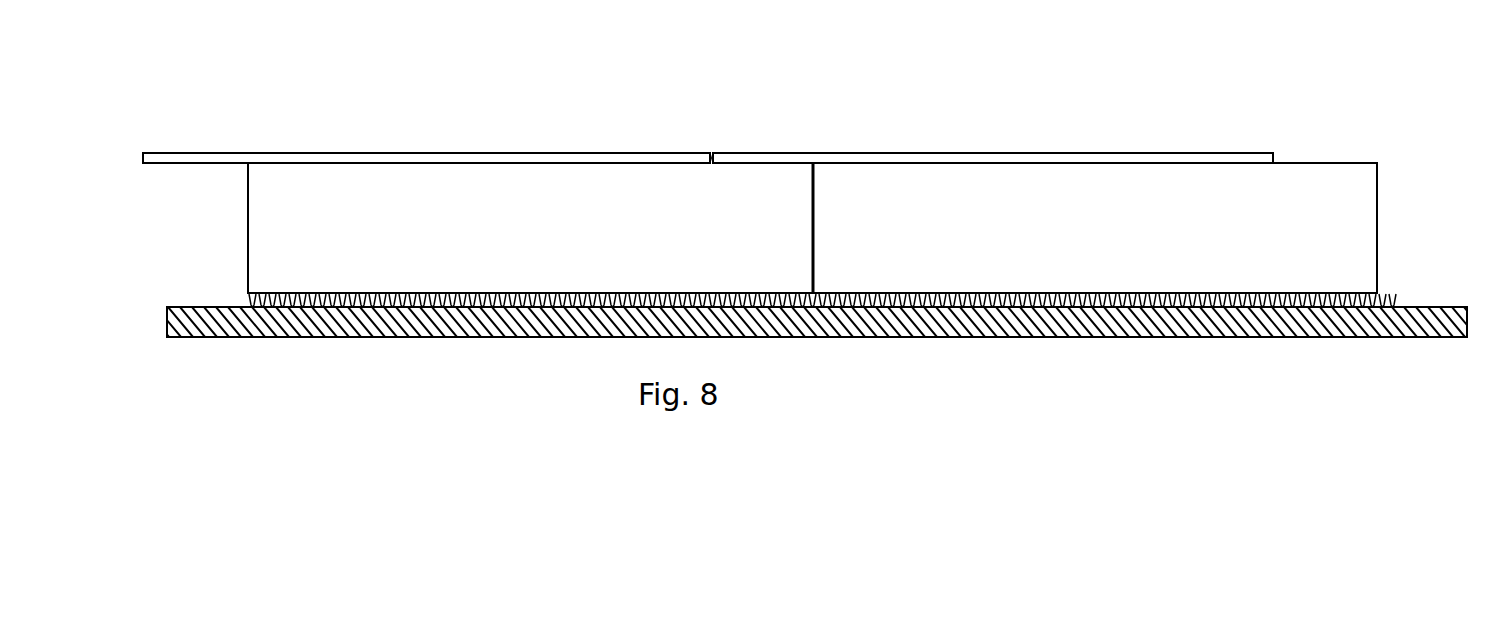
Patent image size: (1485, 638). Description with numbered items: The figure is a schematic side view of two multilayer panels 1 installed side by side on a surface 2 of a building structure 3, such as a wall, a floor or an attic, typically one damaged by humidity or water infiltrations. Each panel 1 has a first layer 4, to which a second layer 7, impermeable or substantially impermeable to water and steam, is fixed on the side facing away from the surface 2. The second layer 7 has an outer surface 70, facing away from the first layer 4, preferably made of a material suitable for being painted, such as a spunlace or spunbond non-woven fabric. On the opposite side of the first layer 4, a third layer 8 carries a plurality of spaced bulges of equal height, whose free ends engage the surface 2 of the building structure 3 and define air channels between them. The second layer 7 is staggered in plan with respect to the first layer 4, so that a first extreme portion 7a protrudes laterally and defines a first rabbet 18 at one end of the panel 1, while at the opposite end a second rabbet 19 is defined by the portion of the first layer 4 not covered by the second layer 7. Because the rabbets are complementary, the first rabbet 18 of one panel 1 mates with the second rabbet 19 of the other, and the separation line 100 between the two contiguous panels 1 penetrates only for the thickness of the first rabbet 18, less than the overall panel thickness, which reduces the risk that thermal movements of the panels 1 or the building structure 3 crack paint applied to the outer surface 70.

The multilayer panel 1 is at (697, 91).
The surface 2 is at (1431, 305).
The building structure 3 is at (435, 325).
The first layer 4 is at (266, 241).
The second layer 7 is at (428, 150).
The first extreme portion 7a is at (197, 152).
The outer surface 70 is at (327, 151).
The third layer 8 is at (246, 299).
The first rabbet 18 is at (232, 167).
The second rabbet 19 is at (1311, 161).
The separation line 100 is at (712, 151).